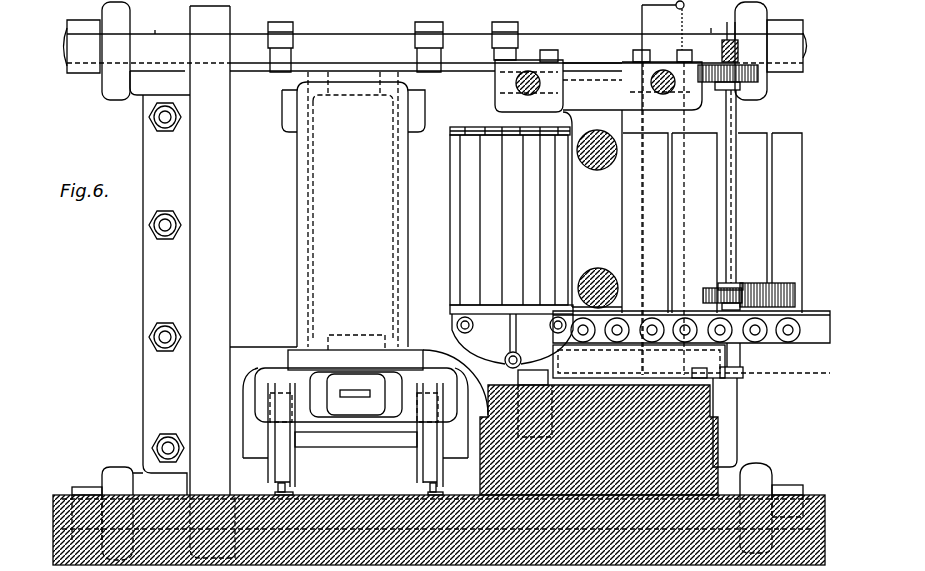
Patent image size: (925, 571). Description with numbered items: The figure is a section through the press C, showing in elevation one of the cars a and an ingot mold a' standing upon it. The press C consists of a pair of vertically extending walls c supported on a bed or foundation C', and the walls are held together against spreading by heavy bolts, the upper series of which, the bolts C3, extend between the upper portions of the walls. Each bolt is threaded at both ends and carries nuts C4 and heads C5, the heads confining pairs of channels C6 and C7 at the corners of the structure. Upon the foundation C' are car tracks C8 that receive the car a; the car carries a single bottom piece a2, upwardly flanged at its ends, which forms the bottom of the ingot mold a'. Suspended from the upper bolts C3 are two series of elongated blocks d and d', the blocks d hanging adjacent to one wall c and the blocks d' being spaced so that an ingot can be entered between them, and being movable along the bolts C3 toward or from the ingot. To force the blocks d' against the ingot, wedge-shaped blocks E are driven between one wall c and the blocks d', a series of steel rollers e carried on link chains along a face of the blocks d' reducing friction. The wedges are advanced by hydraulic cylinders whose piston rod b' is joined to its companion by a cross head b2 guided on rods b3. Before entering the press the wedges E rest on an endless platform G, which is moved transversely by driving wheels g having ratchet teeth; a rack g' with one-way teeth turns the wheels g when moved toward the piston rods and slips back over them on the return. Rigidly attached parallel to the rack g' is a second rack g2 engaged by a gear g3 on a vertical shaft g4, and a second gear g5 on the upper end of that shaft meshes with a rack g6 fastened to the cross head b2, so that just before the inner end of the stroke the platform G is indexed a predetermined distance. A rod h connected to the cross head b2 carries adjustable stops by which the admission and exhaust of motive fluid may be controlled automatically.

The nuts C4 is at (84, 36).
The heads C5 is at (118, 472).
The channels C6 is at (158, 30).
The channels C7 is at (163, 268).
The upper series of bolts C3 is at (435, 47).
The vertically extending walls c is at (746, 123).
The press C is at (152, 283).
The elongated blocks d is at (263, 218).
The elongated blocks d' is at (421, 167).
The ingot molds a' is at (352, 211).
The bottom piece a2 is at (355, 359).
The cars a is at (365, 401).
The car tracks C8 is at (448, 487).
The bed or foundation C' is at (439, 475).
The steel rollers e is at (511, 282).
The rods or guides b3 is at (512, 93).
The cross heads b2 is at (598, 175).
The piston rod b' is at (598, 276).
The wedge-shaped blocks E is at (670, 223).
The rod h is at (676, 8).
The rack g' is at (652, 218).
The rack g6 is at (719, 42).
The gear g5 is at (709, 84).
The vertical shaft g4 is at (764, 201).
The gear g3 is at (712, 290).
The second rack g2 is at (768, 281).
The platform G is at (800, 312).
The driving wheels g is at (691, 392).